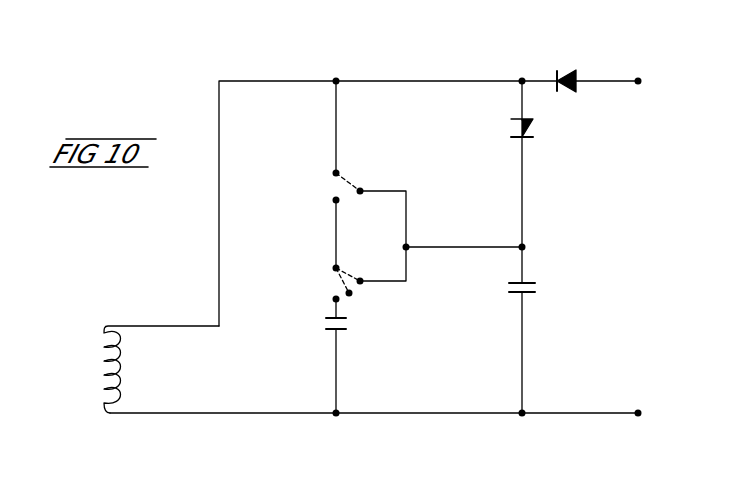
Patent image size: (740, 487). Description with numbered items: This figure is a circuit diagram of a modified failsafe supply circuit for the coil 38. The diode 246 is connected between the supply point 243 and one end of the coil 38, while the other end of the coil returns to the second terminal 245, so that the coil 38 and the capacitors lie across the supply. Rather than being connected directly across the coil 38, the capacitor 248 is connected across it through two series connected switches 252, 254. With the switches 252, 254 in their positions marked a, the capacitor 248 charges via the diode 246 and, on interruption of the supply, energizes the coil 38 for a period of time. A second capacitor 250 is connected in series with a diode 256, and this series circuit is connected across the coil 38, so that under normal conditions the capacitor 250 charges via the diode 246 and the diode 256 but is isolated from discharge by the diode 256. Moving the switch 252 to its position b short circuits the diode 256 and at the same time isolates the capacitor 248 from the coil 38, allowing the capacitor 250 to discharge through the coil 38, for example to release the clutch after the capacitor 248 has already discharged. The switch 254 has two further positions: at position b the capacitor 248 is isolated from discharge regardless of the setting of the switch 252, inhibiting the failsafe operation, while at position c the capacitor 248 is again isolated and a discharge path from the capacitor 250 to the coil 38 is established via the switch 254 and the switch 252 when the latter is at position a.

The coil 38 is at (100, 372).
The supply point 243 is at (642, 82).
The terminal 245 is at (640, 417).
The diode 246 is at (575, 79).
The capacitor 248 is at (343, 331).
The second capacitor 250 is at (530, 282).
The switch 252 is at (333, 186).
The switch 254 is at (333, 284).
The diode 256 is at (530, 140).